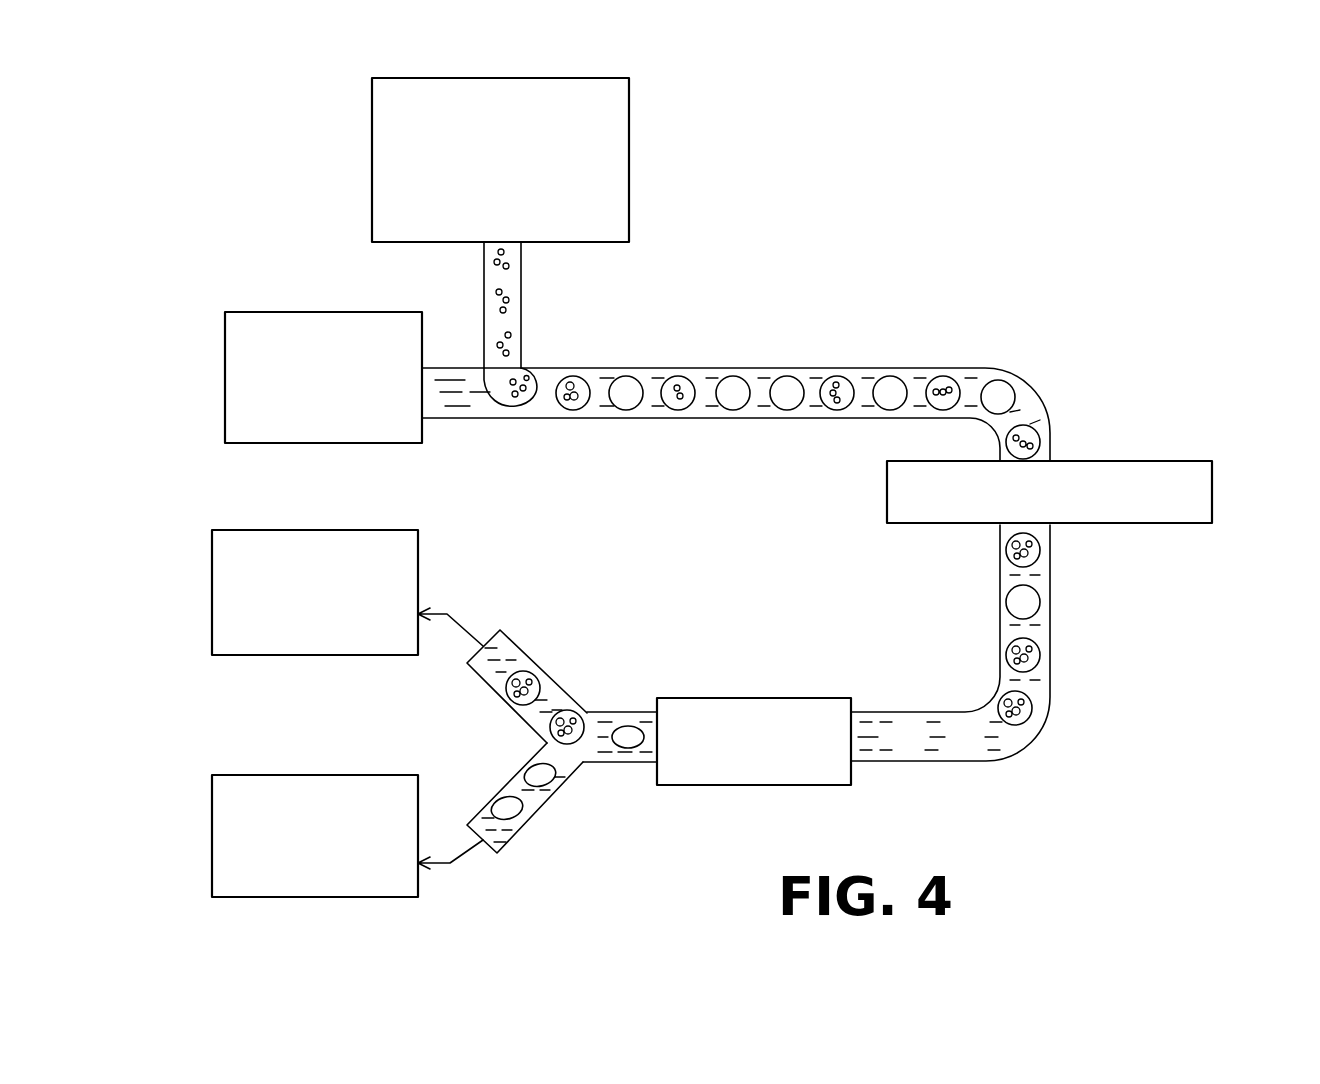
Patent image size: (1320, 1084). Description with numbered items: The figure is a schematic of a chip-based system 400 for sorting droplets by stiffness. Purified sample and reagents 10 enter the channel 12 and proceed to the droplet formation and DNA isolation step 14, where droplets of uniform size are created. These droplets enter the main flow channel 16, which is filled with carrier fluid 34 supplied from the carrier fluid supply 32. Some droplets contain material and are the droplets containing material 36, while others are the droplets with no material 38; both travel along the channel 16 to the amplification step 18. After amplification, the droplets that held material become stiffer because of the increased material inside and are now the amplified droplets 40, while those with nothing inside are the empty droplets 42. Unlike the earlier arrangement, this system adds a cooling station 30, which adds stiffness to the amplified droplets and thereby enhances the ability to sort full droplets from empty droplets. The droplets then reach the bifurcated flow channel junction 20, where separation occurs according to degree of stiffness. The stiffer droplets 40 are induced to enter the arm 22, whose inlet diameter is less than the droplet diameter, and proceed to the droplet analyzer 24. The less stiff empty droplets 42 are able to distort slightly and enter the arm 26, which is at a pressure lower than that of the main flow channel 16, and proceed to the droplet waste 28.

The purified sample and reagents 10 is at (629, 175).
The channel 12 is at (484, 292).
The droplet formation and DNA isolation step 14 is at (523, 368).
The main flow channel 16 is at (733, 418).
The amplification step 18 is at (1113, 461).
The bifurcated flow channel junction 20 is at (620, 702).
The second flow channel arm 22 is at (512, 666).
The droplet analyzer 24 is at (342, 530).
The second flow channel arm 26 is at (533, 817).
The droplet waste 28 is at (305, 775).
The cooling station 30 is at (771, 698).
The carrier fluid supply 32 is at (340, 312).
The carrier fluid 34 is at (462, 403).
The droplets containing material 36 is at (578, 378).
The droplets with no material 38 is at (732, 380).
The amplified droplets 40 is at (1030, 705).
The empty droplets 42 is at (1035, 602).
The chip-based droplet sorting system 400 is at (866, 221).